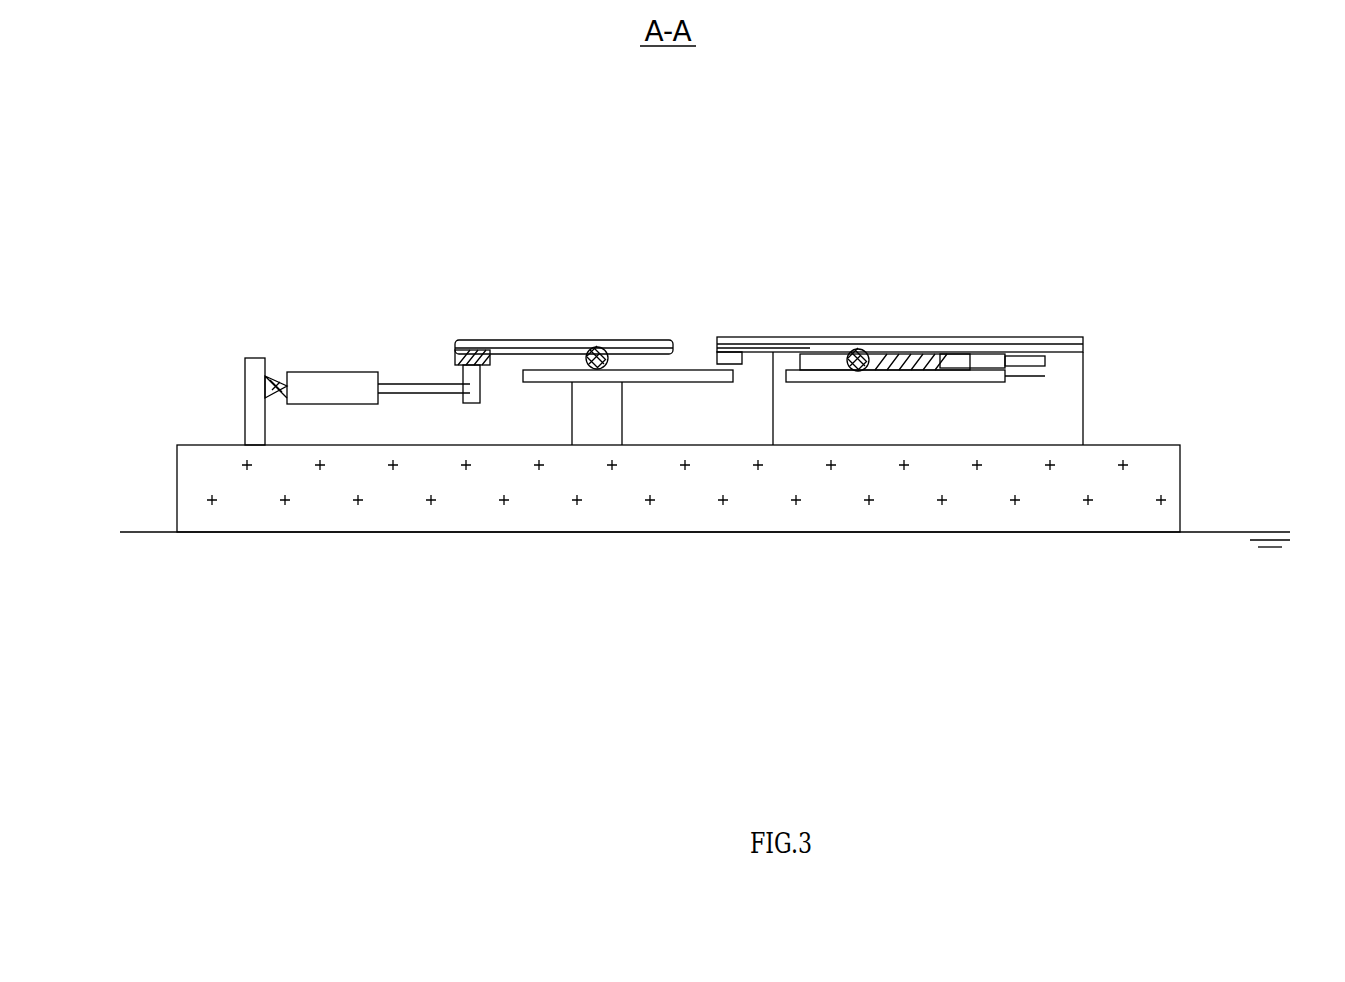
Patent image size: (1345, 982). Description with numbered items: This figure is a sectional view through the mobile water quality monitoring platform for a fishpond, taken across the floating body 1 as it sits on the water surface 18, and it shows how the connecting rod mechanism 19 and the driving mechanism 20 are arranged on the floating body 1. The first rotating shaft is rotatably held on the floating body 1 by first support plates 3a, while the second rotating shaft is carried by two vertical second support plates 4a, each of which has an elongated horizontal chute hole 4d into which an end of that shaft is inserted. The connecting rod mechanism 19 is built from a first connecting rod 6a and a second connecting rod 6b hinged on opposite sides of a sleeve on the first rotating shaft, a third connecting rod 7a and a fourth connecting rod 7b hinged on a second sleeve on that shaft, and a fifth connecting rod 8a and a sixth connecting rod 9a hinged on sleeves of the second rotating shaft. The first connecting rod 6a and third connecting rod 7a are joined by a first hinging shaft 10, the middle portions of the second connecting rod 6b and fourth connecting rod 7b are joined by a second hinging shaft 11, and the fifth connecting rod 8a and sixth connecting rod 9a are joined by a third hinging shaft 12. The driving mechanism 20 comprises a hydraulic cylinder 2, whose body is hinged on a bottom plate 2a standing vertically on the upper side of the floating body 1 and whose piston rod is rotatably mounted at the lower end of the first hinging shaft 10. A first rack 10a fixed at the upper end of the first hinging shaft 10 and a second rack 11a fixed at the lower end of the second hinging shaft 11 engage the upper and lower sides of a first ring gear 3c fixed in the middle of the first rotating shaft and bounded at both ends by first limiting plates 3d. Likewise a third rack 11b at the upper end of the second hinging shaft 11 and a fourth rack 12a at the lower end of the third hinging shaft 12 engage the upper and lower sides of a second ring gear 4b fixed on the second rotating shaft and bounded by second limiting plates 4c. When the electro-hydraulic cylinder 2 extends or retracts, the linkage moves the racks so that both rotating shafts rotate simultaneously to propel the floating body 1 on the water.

The floating body 1 is at (317, 507).
The hydraulic cylinder 2 is at (323, 372).
The bottom plate 2a is at (245, 393).
The first support plate 3a is at (592, 425).
The first ring gear 3c is at (590, 347).
The first limiting plate 3d is at (600, 365).
The second support plate 4a is at (1083, 403).
The second ring gear 4b is at (870, 353).
The second limiting plate 4c is at (947, 352).
The chute hole 4d is at (1043, 366).
The first connecting rod 6a is at (445, 350).
The second connecting rod 6b is at (757, 353).
The third connecting rod 7a is at (482, 368).
The fourth connecting rod 7b is at (710, 347).
The fifth connecting rod 8a is at (1008, 368).
The sixth connecting rod 9a is at (1003, 372).
The first hinging shaft 10 is at (470, 400).
The first rack 10a is at (500, 337).
The second hinging shaft 11 is at (728, 338).
The second rack 11a is at (662, 382).
The third rack 11b is at (817, 345).
The third hinging shaft 12 is at (983, 383).
The fourth rack 12a is at (930, 383).
The water surface 18 is at (140, 533).
The connecting rod mechanism 19 is at (764, 300).
The driving mechanism 20 is at (178, 402).